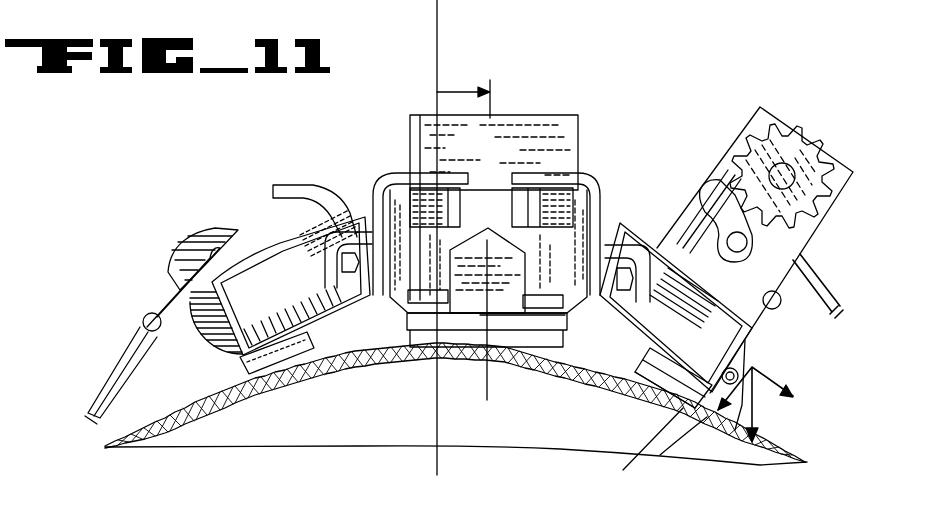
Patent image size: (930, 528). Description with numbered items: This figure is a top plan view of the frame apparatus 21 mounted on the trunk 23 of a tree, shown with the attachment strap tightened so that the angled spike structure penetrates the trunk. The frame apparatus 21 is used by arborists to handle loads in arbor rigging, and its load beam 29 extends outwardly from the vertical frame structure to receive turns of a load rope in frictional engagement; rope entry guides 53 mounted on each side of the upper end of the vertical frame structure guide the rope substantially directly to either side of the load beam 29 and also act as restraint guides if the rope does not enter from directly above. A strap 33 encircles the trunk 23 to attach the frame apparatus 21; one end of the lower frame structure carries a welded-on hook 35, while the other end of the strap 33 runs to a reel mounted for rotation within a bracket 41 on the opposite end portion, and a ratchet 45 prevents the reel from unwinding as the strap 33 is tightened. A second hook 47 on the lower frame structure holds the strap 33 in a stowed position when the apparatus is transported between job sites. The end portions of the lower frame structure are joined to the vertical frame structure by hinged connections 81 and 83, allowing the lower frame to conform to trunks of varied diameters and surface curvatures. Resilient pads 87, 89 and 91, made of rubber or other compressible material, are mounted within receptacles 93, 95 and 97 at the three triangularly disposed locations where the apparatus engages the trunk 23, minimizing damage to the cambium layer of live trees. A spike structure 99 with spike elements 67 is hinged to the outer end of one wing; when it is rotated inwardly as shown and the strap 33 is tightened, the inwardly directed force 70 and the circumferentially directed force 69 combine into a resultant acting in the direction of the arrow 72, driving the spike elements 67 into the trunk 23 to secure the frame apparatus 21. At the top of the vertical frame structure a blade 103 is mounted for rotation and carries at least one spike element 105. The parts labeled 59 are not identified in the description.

The frame apparatus 21 is at (124, 175).
The trunk 23 is at (180, 433).
The load beam 29 is at (577, 142).
The strap 33 is at (113, 377).
The welded-on hook 35 is at (217, 225).
The bracket 41 is at (800, 238).
The ratchet 45 is at (730, 152).
The second hook 47 is at (283, 177).
The rope entry guides 53 is at (385, 188).
The hook 59 is at (300, 232).
The spike elements 67 is at (668, 450).
The circumferentially directed force 69 is at (762, 362).
The inwardly directed force 70 is at (745, 405).
The arrow 72 is at (760, 402).
The hinged connection 81 is at (366, 296).
The hinged connection 83 is at (610, 282).
The resilient pad 87 is at (280, 355).
The resilient pad 89 is at (660, 393).
The resilient pad 91 is at (547, 340).
The receptacle 93 is at (238, 358).
The receptacle 95 is at (627, 373).
The receptacle 97 is at (407, 318).
The spike structure 99 is at (644, 452).
The blade 103 is at (465, 280).
The spike element 105 is at (488, 230).